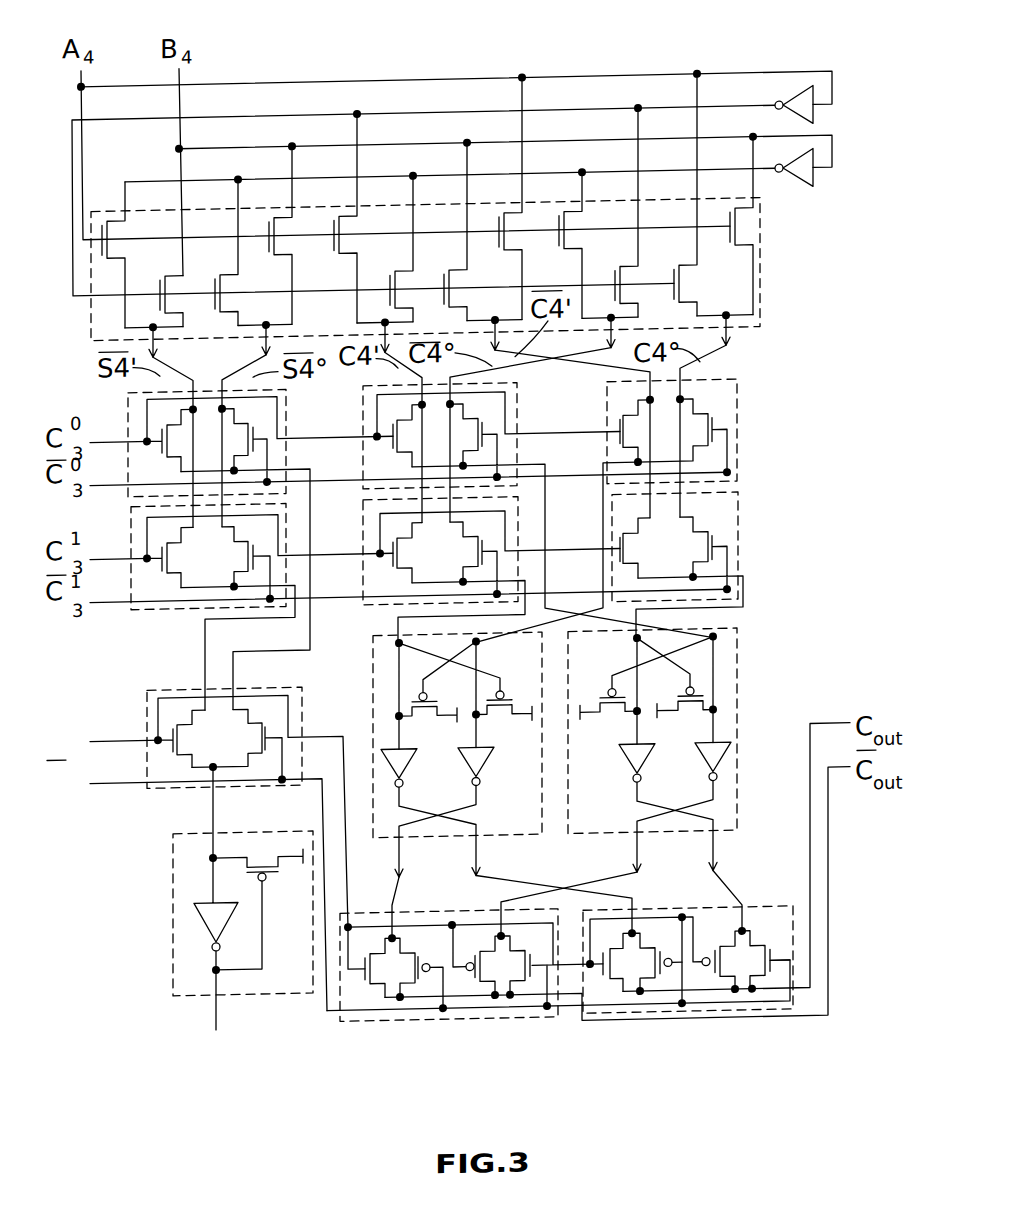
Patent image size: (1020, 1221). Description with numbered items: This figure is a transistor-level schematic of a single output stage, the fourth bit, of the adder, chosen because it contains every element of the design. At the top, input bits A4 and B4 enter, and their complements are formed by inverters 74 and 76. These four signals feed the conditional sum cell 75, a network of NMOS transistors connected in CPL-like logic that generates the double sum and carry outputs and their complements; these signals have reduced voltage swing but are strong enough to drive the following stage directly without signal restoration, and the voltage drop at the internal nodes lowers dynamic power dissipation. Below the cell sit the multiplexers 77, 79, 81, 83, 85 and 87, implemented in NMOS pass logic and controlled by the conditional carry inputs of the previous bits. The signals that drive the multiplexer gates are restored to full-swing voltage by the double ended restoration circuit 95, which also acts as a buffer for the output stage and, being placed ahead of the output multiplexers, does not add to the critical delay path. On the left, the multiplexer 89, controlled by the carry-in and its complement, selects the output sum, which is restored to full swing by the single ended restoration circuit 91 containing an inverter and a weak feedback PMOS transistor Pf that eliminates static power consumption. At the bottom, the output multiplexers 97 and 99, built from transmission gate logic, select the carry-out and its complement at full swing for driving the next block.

The inverter 74 is at (823, 116).
The conditional sum cell 75 is at (777, 253).
The inverter 76 is at (816, 185).
The multiplexer 77 is at (118, 415).
The multiplexer 79 is at (357, 419).
The multiplexer 81 is at (762, 445).
The multiplexer 83 is at (123, 534).
The multiplexer 85 is at (363, 537).
The multiplexer 87 is at (768, 523).
The multiplexer 89 is at (147, 700).
The single ended restoration circuit 91 is at (141, 887).
The double ended restoration circuit 95 is at (757, 694).
The output multiplexer 97 is at (388, 1020).
The output multiplexer 99 is at (623, 1016).